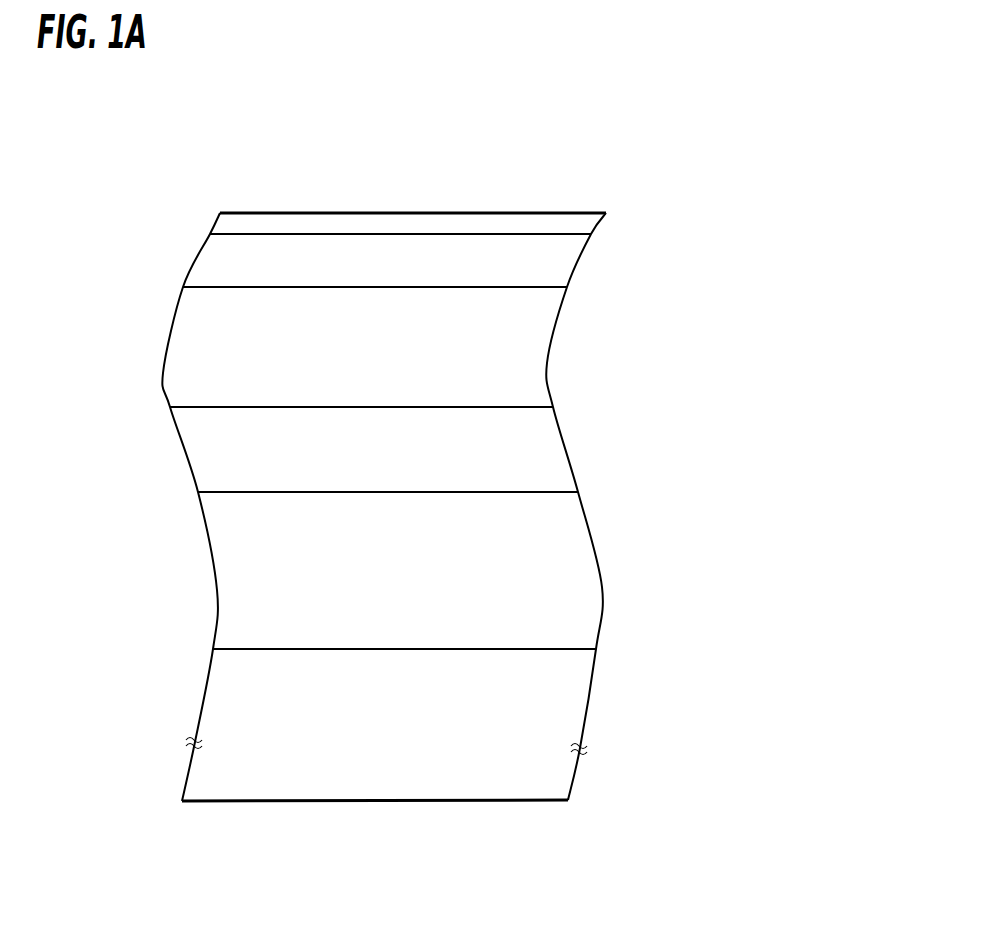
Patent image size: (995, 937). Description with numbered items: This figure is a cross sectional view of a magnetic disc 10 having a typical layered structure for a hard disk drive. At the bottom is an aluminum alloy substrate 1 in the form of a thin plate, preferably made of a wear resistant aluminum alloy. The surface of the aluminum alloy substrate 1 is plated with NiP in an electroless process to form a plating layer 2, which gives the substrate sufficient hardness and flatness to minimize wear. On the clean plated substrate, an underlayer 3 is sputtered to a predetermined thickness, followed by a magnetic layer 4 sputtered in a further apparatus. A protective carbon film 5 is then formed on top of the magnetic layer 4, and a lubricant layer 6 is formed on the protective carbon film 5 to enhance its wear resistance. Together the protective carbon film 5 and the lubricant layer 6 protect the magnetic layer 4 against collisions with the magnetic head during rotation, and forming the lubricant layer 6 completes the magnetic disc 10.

The magnetic disc 10 is at (157, 197).
The lubricant layer 6 is at (537, 222).
The protective carbon film 5 is at (567, 263).
The magnetic layer 4 is at (543, 349).
The underlayer 3 is at (552, 445).
The plating layer 2 is at (588, 595).
The aluminum alloy substrate 1 is at (572, 710).